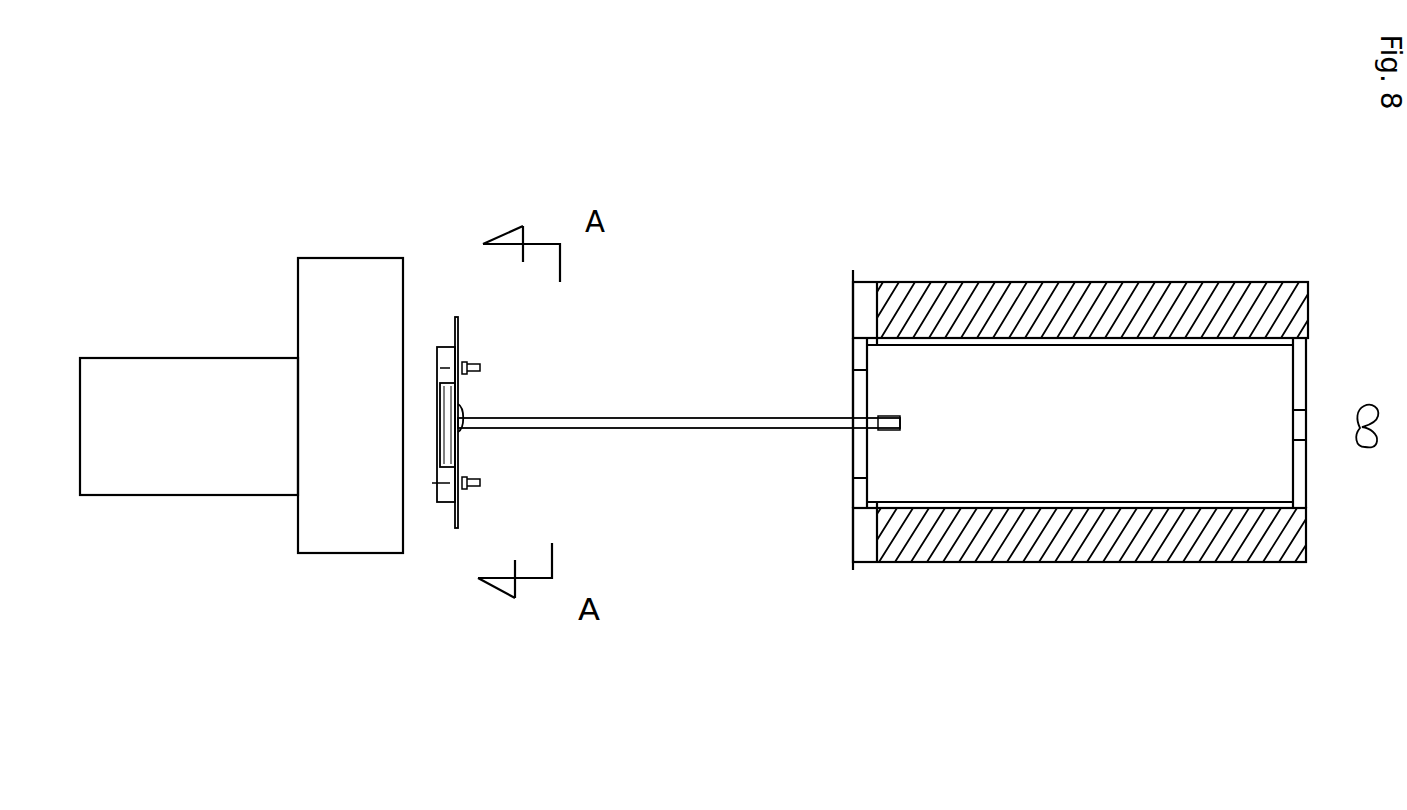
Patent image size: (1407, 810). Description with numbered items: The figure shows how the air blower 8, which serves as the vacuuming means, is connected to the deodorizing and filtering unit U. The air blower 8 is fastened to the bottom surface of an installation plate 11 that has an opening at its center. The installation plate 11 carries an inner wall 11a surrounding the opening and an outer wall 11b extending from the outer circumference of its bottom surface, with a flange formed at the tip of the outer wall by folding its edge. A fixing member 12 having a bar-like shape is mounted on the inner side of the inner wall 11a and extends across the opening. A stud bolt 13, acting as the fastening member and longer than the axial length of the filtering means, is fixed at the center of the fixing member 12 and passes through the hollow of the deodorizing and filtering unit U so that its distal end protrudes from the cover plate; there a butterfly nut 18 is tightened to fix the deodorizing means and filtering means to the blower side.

The air blower 8 is at (237, 380).
The installation plate 11 is at (448, 347).
The inner wall 11a is at (458, 463).
The outer wall 11b is at (446, 500).
The fixing member 12 is at (458, 412).
The stud bolt 13 is at (718, 432).
The deodorizing and filtering unit U is at (1000, 262).
The butterfly nut 18 is at (1368, 447).